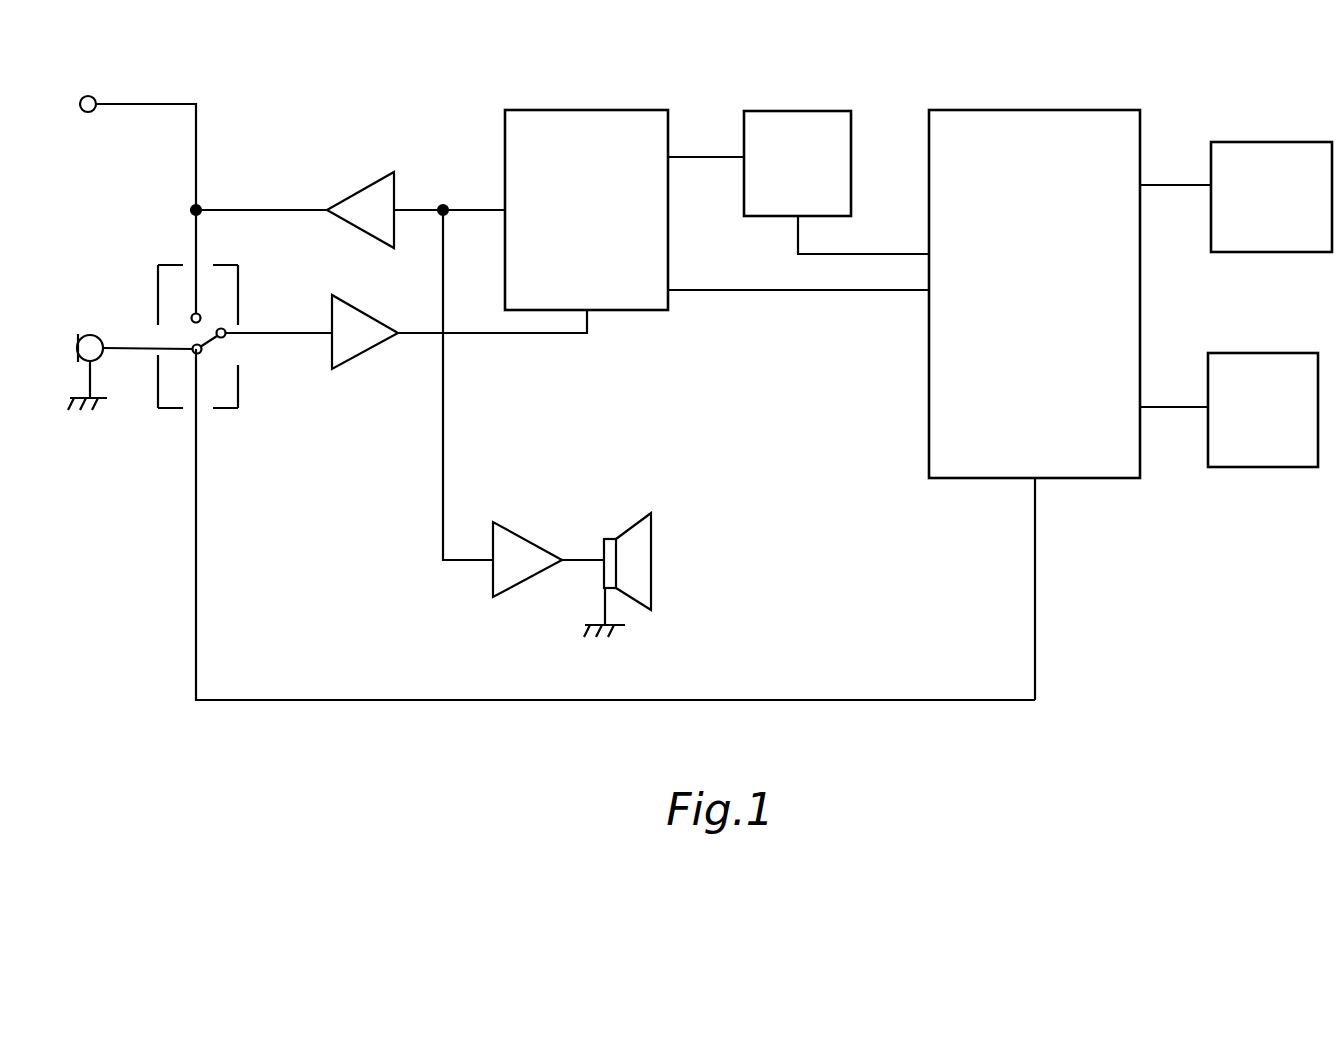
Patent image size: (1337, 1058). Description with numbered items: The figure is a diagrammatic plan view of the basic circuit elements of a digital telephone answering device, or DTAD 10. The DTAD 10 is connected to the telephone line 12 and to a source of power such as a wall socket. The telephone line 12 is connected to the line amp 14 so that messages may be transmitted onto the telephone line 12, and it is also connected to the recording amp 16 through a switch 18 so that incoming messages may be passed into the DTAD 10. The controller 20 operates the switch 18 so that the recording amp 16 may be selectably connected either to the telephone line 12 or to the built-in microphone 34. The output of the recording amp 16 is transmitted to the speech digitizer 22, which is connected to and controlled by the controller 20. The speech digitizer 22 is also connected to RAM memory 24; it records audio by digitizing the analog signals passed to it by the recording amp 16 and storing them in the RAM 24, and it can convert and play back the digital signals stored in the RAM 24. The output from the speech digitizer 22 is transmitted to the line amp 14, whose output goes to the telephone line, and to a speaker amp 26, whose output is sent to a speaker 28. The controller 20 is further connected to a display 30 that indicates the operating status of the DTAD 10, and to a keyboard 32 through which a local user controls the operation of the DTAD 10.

The digital telephone answering device 10 is at (176, 710).
The telephone line 12 is at (197, 124).
The line amp 14 is at (383, 226).
The recording amp 16 is at (368, 348).
The switch 18 is at (222, 410).
The controller 20 is at (1048, 337).
The speech digitizer 22 is at (598, 196).
The RAM memory 24 is at (810, 191).
The speaker amp 26 is at (530, 573).
The speaker 28 is at (655, 580).
The display 30 is at (1281, 232).
The keyboard 32 is at (1272, 458).
The built-in microphone 34 is at (89, 336).